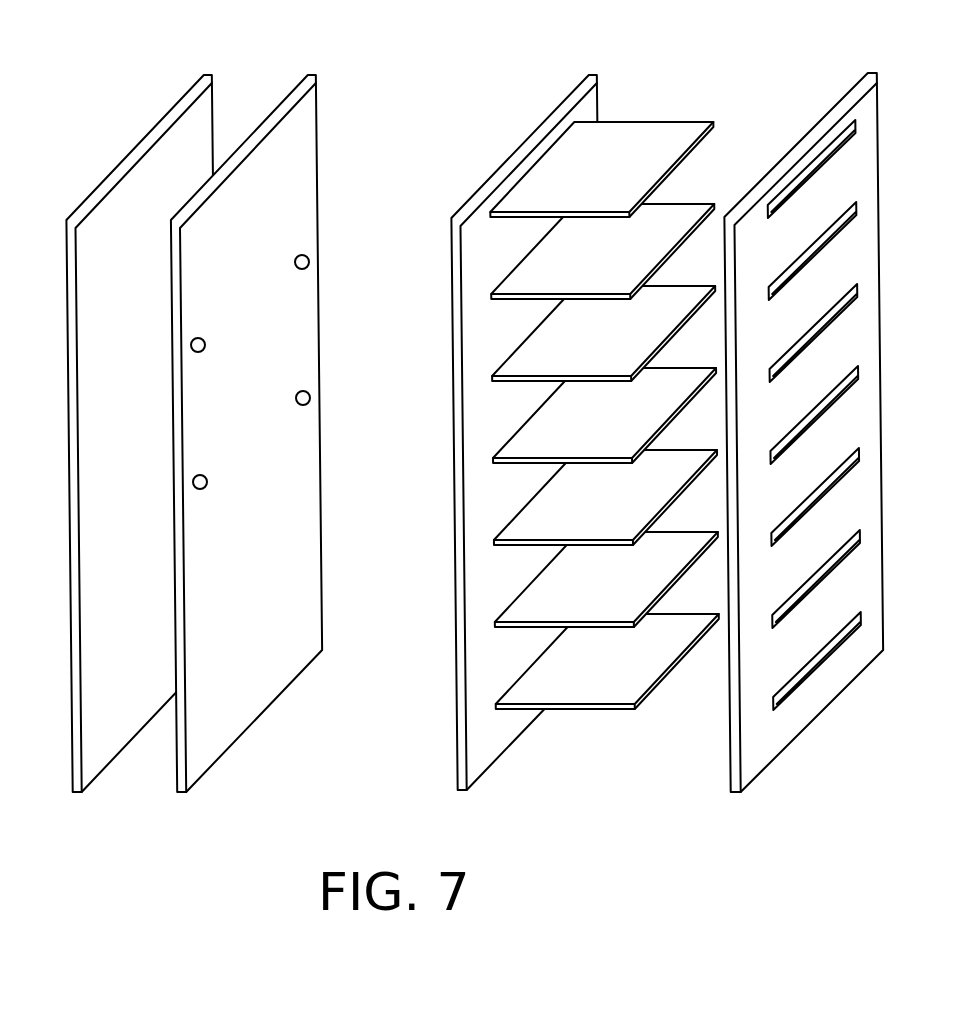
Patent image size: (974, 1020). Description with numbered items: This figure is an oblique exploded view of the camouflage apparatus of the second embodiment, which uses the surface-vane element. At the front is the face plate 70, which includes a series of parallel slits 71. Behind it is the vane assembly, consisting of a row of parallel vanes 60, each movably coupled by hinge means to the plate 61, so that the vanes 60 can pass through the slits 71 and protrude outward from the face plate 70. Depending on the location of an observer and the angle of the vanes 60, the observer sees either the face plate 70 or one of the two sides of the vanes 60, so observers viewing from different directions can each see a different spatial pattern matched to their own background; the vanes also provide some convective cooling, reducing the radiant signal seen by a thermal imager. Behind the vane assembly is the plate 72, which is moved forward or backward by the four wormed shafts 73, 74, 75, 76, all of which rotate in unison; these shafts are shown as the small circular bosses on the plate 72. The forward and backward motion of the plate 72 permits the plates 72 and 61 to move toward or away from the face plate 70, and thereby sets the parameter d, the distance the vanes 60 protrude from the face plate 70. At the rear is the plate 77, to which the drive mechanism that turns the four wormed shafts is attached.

The vane 60 is at (673, 132).
The plate 61 is at (590, 102).
The face plate 70 is at (760, 733).
The slits 71 is at (838, 140).
The plate 72 is at (217, 722).
The wormed shaft 73 is at (207, 483).
The wormed shaft 74 is at (310, 398).
The wormed shaft 75 is at (205, 345).
The wormed shaft 76 is at (309, 262).
The plate 77 is at (118, 713).